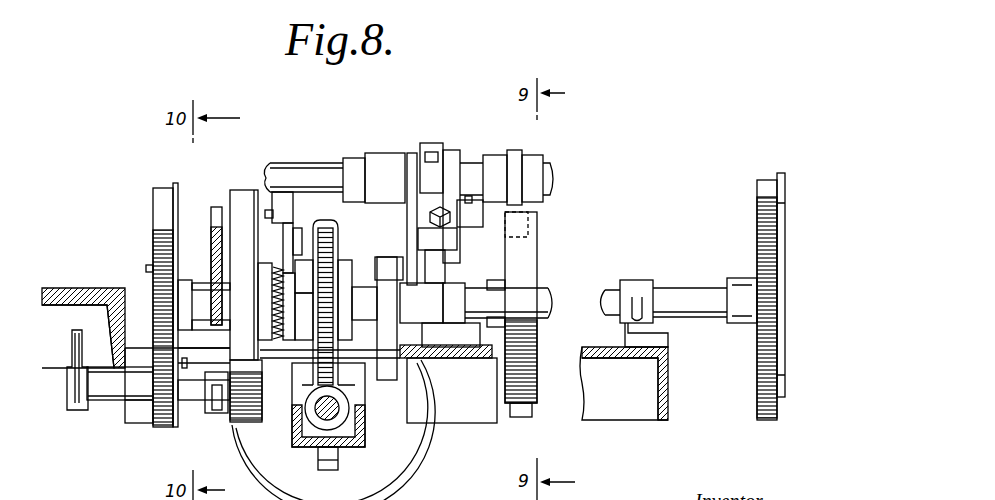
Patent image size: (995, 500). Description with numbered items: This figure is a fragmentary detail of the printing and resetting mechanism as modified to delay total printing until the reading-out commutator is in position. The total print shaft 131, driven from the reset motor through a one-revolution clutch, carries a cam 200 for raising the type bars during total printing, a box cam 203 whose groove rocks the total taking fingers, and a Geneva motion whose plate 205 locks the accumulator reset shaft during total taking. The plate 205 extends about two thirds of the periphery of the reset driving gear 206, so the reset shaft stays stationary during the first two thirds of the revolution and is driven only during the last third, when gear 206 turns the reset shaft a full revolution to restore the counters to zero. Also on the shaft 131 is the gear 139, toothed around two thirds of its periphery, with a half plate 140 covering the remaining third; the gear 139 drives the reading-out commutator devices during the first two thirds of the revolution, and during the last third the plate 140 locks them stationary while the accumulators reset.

The total print shaft 131 is at (685, 296).
The gear 139 is at (760, 379).
The half plate 140 is at (779, 216).
The cam 200 is at (407, 223).
The box cam 203 is at (248, 421).
The plate 205 is at (175, 197).
The reset driving gear 206 is at (153, 243).